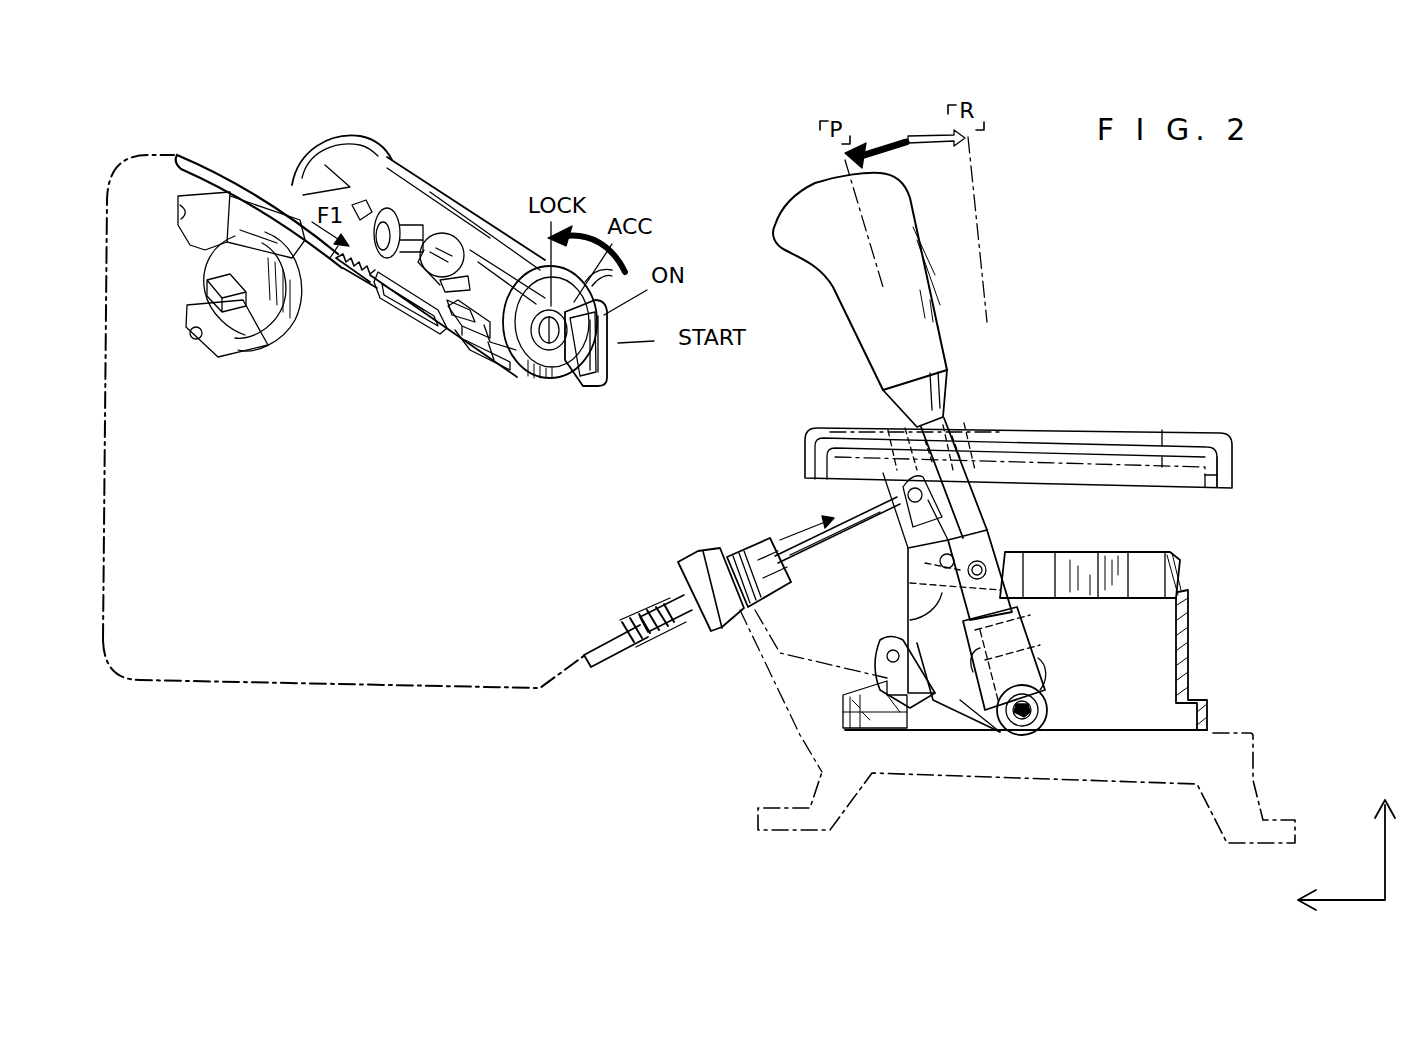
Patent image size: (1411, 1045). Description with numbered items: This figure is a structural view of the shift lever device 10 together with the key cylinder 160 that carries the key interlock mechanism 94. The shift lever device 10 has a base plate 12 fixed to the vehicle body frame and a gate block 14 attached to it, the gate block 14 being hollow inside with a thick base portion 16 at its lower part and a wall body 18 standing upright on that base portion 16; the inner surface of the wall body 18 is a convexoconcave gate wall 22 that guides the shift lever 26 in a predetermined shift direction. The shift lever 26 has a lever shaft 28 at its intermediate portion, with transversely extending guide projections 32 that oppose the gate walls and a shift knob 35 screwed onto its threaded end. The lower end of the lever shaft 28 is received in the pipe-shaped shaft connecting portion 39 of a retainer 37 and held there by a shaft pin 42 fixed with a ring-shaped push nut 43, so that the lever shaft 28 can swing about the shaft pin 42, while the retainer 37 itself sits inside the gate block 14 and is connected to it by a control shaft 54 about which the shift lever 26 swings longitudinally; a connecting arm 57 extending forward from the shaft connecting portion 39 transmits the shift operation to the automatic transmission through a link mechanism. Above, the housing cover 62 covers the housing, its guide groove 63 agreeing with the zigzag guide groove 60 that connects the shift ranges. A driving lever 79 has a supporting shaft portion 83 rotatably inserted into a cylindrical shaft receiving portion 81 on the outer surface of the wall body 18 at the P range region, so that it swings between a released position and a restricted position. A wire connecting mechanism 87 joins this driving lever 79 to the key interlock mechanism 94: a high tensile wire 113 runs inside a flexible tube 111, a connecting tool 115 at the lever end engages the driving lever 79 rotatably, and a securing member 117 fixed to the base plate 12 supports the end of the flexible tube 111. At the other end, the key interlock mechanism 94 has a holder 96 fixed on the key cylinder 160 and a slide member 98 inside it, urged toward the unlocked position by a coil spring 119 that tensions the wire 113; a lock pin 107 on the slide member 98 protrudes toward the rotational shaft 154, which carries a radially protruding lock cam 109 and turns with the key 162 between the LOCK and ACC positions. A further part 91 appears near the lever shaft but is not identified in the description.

The shift lever device 10 is at (1073, 336).
The base plate 12 is at (1280, 782).
The gate block 14 is at (1192, 603).
The base portion 16 is at (1208, 720).
The wall body 18 is at (1155, 552).
The gate wall 22 is at (1080, 563).
The shift lever 26 is at (810, 181).
The lever shaft 28 is at (960, 497).
The guide projections 32 is at (1007, 548).
The shift knob 35 is at (790, 217).
The retainer 37 is at (962, 712).
The shaft connecting portion 39 is at (1052, 712).
The shaft pin 42 is at (1052, 653).
The push nut 43 is at (964, 705).
The control shaft 54 is at (1027, 723).
The connecting arm 57 is at (920, 693).
The guide groove 60 is at (1103, 463).
The housing cover 62 is at (1225, 430).
The guide groove 63 is at (1078, 457).
The driving lever 79 is at (887, 437).
The shaft receiving portion 81 is at (907, 585).
The supporting shaft portion 83 is at (907, 617).
The wire connecting mechanism 87 is at (630, 663).
The link lever 91 is at (890, 507).
The key interlock mechanism 94 is at (410, 338).
The holder 96 is at (440, 336).
The slide member 98 is at (370, 290).
The lock pin 107 is at (432, 330).
The lock cam 109 is at (430, 200).
The flexible tube 111 is at (222, 176).
The wire 113 is at (824, 544).
The connecting tool 115 is at (884, 520).
The securing member 117 is at (745, 545).
The coil spring 119 is at (362, 292).
The rotational shaft 154 is at (413, 202).
The key cylinder 160 is at (470, 198).
The key 162 is at (598, 384).